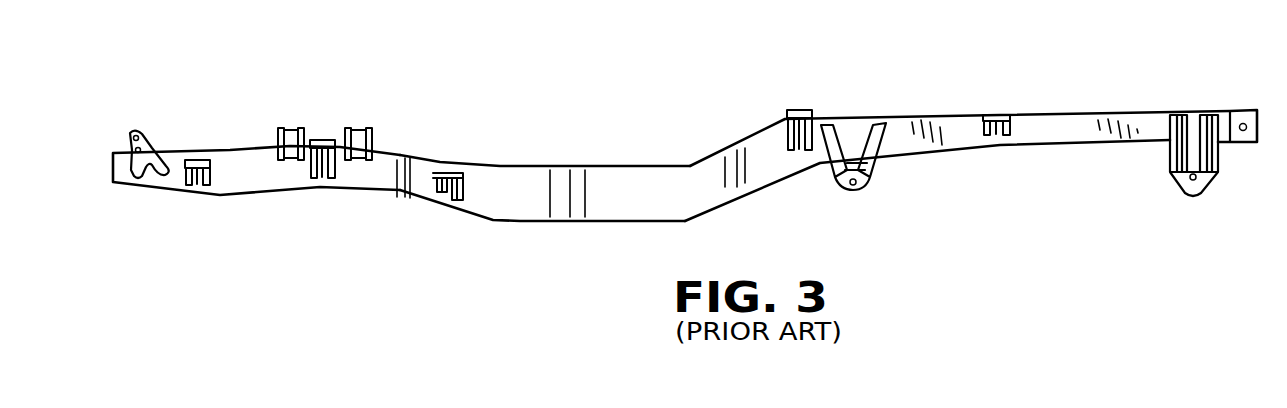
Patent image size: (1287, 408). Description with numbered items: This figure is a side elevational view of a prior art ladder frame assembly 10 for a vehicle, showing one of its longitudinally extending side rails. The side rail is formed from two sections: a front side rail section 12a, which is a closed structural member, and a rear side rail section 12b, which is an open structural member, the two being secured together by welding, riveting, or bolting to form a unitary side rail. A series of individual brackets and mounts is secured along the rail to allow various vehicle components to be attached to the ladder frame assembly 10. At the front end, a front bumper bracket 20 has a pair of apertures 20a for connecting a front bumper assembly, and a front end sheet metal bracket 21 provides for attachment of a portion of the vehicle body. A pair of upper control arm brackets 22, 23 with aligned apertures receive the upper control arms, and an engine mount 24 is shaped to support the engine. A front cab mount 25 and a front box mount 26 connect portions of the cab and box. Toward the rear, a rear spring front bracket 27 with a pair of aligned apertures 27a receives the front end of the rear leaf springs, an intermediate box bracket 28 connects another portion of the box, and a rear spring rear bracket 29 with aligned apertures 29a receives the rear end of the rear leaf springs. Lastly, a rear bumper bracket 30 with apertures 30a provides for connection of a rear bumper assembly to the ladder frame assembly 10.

The prior art ladder frame assembly 10 is at (990, 198).
The front side rail section 12a is at (236, 196).
The rear side rail section 12b is at (550, 174).
The front bumper bracket 20 is at (124, 124).
The apertures 20a is at (132, 135).
The front end sheet metal bracket 21 is at (200, 160).
The upper control arm bracket 22 is at (288, 128).
The upper control arm bracket 23 is at (372, 135).
The engine mount 24 is at (320, 140).
The front cab mount 25 is at (448, 175).
The front box mount 26 is at (797, 110).
The rear spring front bracket 27 is at (839, 158).
The aligned apertures 27a is at (852, 188).
The intermediate box bracket 28 is at (998, 115).
The rear spring rear bracket 29 is at (1177, 155).
The aligned apertures 29a is at (1190, 193).
The rear bumper bracket 30 is at (1252, 118).
The apertures 30a is at (1243, 132).